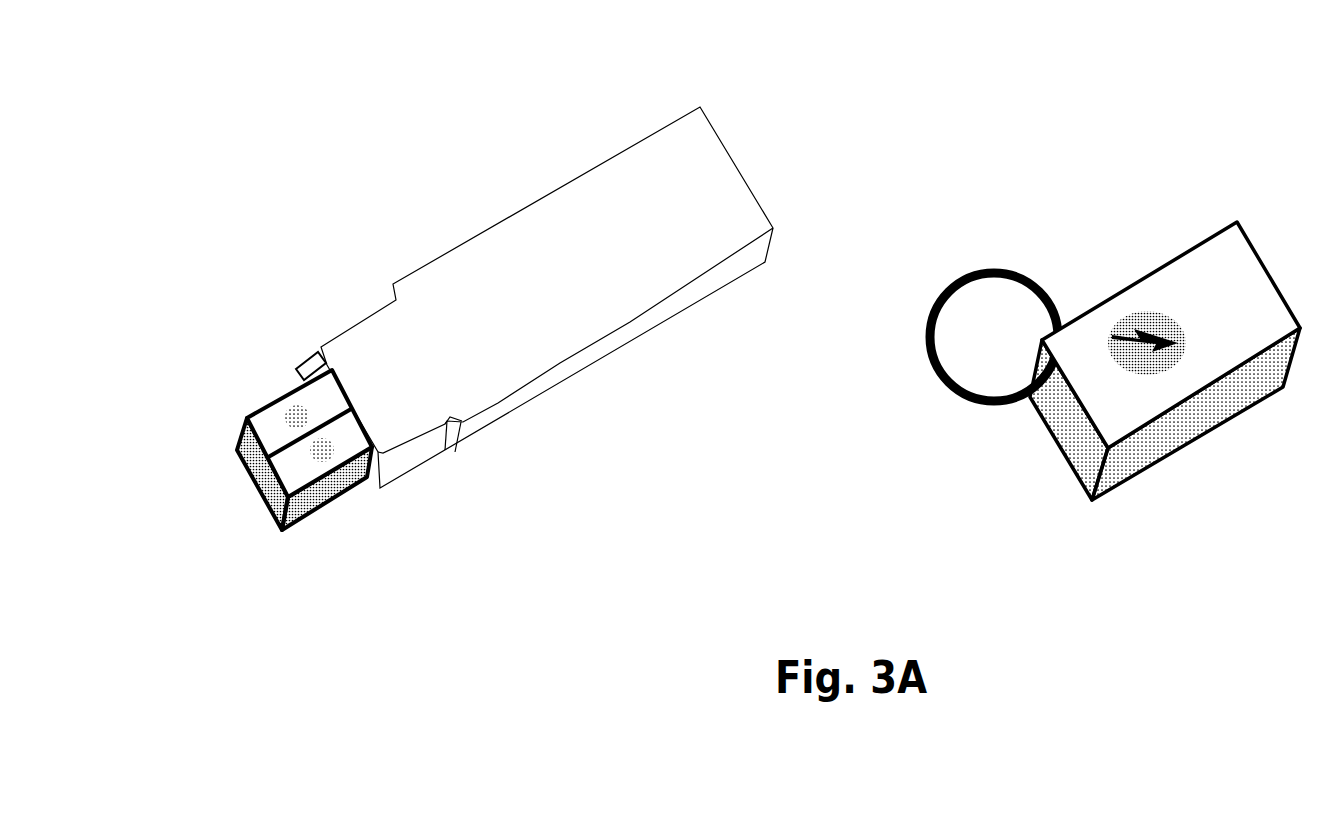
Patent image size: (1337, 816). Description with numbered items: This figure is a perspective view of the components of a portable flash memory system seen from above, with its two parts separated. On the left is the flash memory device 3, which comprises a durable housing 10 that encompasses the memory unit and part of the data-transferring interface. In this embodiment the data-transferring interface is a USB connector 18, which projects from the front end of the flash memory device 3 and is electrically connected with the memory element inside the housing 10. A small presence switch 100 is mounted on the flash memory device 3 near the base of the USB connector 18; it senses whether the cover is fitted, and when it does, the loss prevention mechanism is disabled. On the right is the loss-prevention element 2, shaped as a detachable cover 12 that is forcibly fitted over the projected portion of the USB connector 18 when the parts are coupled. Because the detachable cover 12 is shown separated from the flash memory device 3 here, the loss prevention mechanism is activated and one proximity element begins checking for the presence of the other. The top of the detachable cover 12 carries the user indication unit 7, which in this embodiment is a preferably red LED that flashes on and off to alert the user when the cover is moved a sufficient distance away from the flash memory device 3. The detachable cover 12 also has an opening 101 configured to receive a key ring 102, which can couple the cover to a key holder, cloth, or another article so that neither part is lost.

The loss-prevention element 2 is at (1155, 289).
The flash memory device 3 is at (551, 183).
The user indication unit 7 is at (1139, 299).
The housing 10 is at (467, 237).
The detachable cover 12 is at (1271, 258).
The USB connector 18 is at (270, 385).
The presence switch 100 is at (302, 340).
The opening 101 is at (1047, 343).
The key ring 102 is at (935, 285).